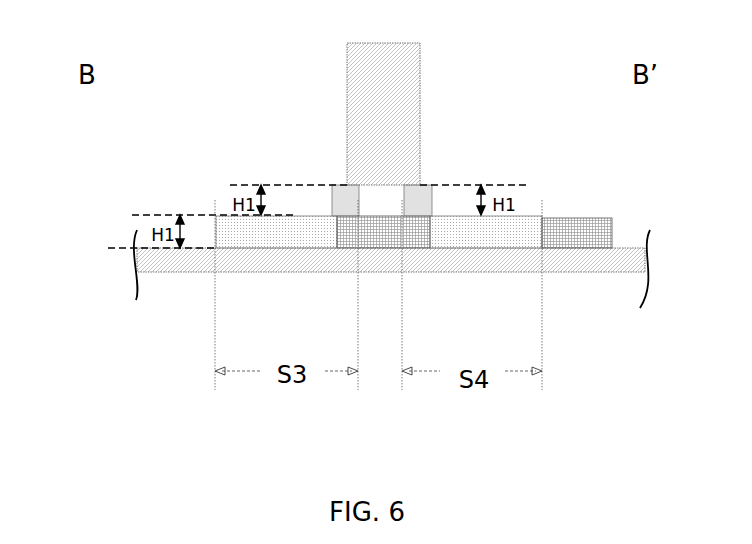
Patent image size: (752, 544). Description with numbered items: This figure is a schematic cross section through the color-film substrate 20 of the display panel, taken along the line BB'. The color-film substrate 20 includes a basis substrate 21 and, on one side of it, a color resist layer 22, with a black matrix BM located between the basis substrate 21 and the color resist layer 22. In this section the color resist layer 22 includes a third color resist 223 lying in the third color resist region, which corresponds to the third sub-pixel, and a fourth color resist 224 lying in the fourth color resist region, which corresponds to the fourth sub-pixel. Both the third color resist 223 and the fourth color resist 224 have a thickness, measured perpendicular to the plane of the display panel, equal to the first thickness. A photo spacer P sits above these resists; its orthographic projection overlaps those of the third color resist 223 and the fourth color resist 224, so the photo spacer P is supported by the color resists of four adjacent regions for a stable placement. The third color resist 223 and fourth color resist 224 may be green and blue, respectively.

The color-film substrate 20 is at (677, 34).
The basis substrate 21 is at (585, 262).
The color resist layer 22 is at (323, 307).
The third color resist 223 is at (318, 230).
The fourth color resist 224 is at (470, 238).
The black matrix BM is at (347, 205).
The photo spacer P is at (393, 134).